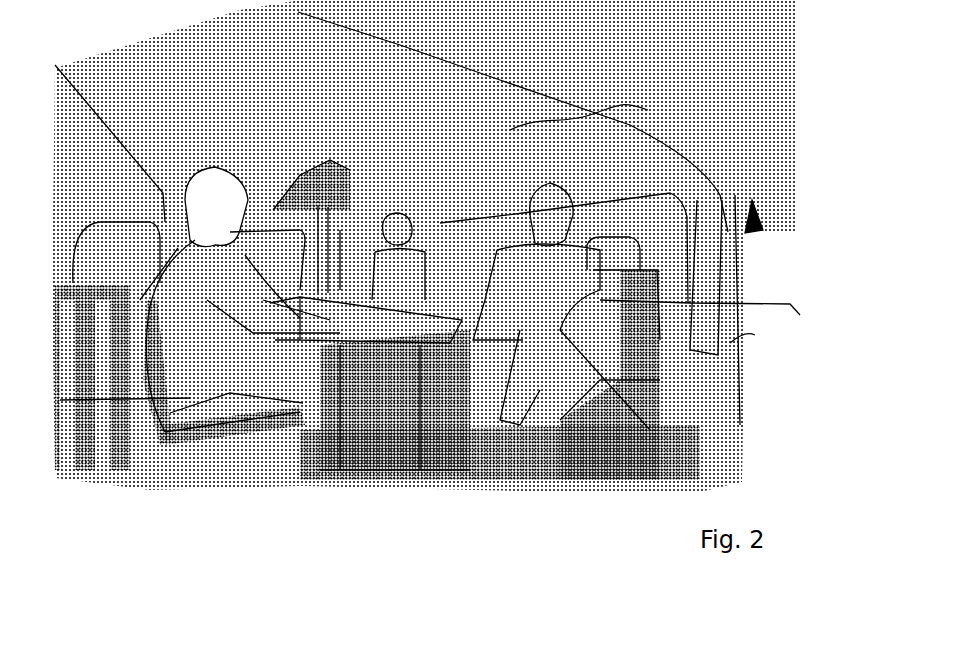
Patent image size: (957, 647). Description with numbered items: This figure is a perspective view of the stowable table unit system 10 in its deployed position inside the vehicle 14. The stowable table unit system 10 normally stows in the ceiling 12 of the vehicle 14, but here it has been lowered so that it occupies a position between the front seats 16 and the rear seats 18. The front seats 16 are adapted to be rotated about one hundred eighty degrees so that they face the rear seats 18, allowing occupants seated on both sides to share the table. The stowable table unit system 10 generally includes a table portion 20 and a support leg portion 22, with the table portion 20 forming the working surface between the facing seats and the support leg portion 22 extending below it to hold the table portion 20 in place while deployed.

The stowable table unit system 10 is at (268, 228).
The ceiling 12 is at (583, 106).
The vehicle 14 is at (763, 213).
The front seats 16 is at (628, 495).
The rear seats 18 is at (193, 477).
The table portion 20 is at (435, 483).
The support leg portion 22 is at (372, 483).